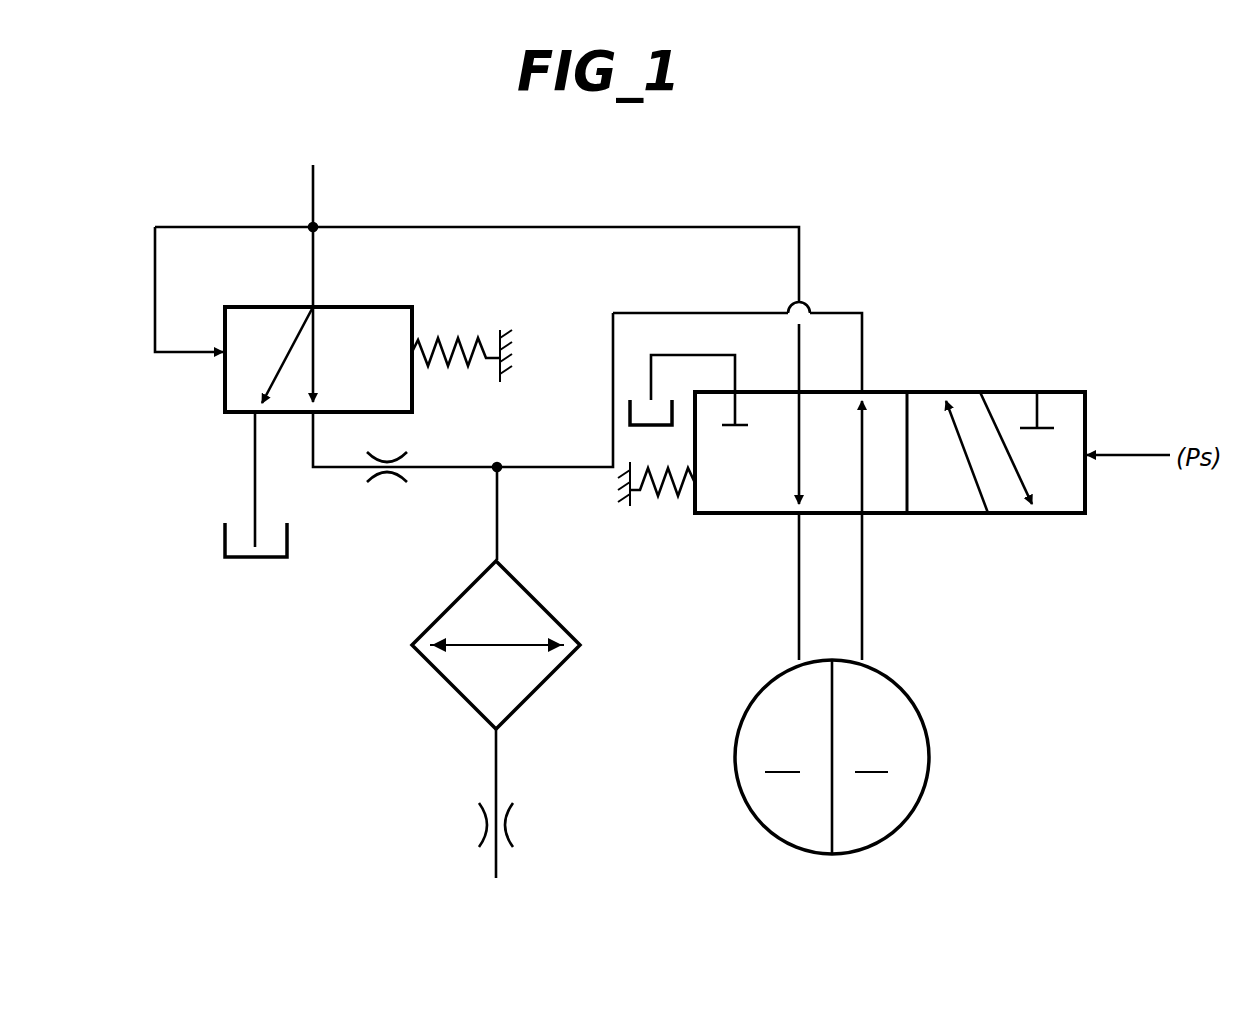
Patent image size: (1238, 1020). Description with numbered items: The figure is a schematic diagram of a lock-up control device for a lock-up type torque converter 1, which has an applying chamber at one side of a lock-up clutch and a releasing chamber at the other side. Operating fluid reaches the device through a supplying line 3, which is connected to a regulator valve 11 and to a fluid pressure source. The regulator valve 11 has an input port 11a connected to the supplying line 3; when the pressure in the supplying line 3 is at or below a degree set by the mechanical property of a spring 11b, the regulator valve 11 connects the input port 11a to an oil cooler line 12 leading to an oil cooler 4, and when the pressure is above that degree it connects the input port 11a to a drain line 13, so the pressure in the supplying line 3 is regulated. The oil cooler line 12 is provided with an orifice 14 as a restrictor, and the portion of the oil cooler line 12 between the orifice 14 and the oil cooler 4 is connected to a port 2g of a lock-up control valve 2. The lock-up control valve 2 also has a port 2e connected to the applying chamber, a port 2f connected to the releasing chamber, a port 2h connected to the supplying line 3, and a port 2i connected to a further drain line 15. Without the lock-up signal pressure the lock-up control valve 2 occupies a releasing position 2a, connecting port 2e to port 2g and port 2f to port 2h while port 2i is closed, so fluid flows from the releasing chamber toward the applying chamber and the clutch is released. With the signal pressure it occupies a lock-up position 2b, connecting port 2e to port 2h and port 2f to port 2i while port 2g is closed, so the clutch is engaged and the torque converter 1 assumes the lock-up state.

The lock-up type torque converter 1 is at (930, 752).
The lock-up control valve 2 is at (1075, 513).
The releasing position 2a is at (890, 490).
The lock-up position 2b is at (1055, 490).
The port 2e is at (862, 515).
The port 2f is at (798, 515).
The port 2g is at (864, 392).
The port 2h is at (800, 392).
The port 2i is at (737, 392).
The supplying line 3 is at (313, 186).
The oil cooler 4 is at (437, 620).
The regulator valve 11 is at (412, 307).
The input port 11a is at (313, 307).
The spring 11b is at (456, 372).
The oil cooler line 12 is at (462, 467).
The drain line 13 is at (255, 472).
The orifice 14 is at (381, 485).
The drain line 15 is at (690, 352).